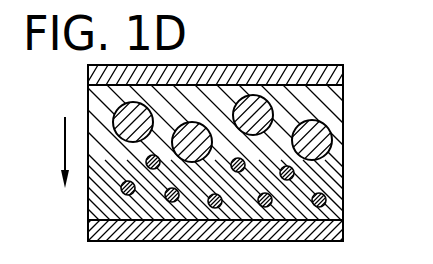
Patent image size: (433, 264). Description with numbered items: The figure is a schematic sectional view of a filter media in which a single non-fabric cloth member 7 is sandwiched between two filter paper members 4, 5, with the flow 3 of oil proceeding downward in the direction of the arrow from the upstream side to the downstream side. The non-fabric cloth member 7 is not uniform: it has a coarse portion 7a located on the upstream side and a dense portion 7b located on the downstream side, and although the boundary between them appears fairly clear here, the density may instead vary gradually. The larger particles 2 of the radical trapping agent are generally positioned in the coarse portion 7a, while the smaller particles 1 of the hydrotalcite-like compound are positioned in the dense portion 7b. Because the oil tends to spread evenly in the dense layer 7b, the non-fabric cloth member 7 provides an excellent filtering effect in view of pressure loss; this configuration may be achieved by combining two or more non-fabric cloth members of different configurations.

The particles of the hydrotalcite-like compound 1 is at (343, 200).
The particles of the radical trapping agent 2 is at (343, 133).
The flow of oil 3 is at (65, 148).
The filter paper member 4 is at (322, 67).
The filter paper member 5 is at (343, 230).
The non-fabric cloth member 7 is at (216, 143).
The coarse portion 7a is at (367, 95).
The dense portion 7b is at (343, 170).